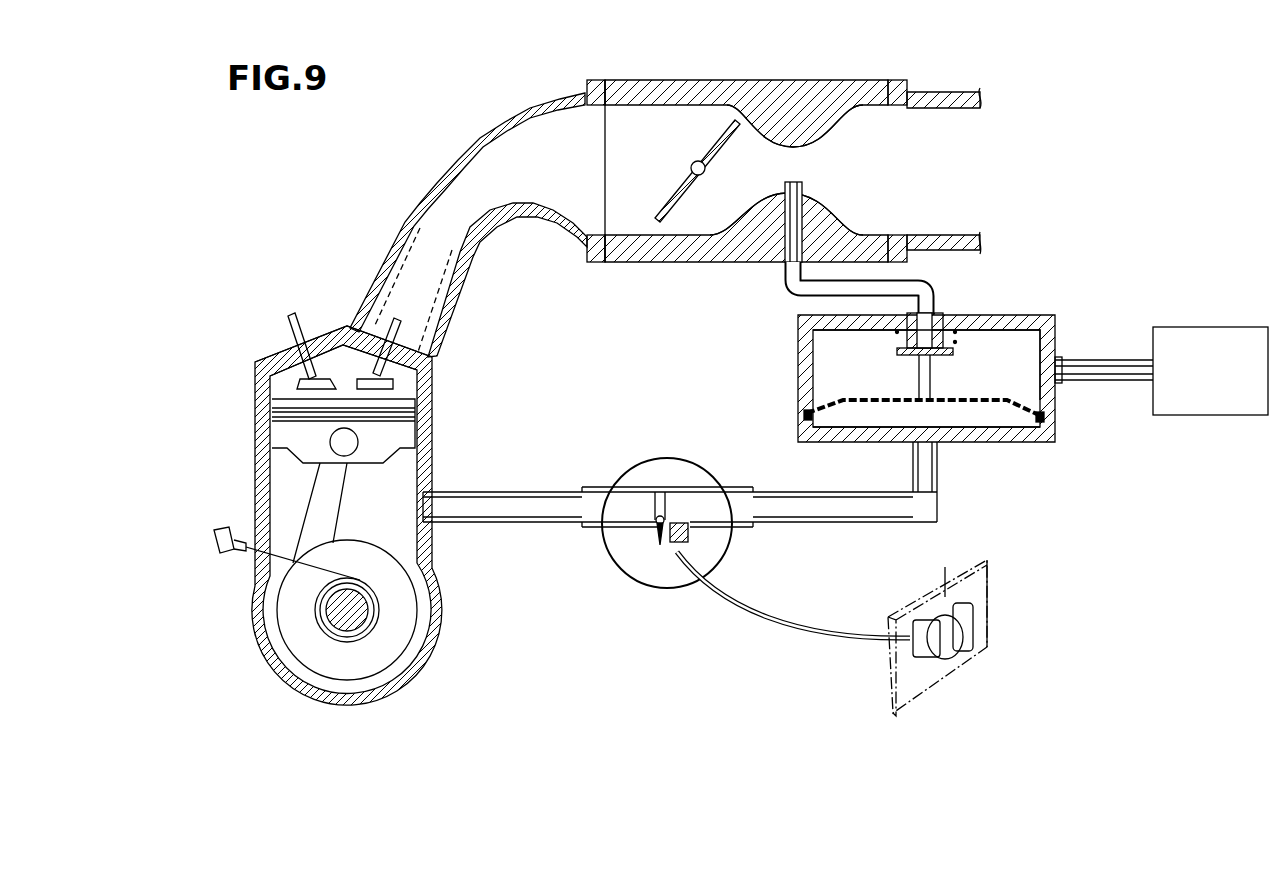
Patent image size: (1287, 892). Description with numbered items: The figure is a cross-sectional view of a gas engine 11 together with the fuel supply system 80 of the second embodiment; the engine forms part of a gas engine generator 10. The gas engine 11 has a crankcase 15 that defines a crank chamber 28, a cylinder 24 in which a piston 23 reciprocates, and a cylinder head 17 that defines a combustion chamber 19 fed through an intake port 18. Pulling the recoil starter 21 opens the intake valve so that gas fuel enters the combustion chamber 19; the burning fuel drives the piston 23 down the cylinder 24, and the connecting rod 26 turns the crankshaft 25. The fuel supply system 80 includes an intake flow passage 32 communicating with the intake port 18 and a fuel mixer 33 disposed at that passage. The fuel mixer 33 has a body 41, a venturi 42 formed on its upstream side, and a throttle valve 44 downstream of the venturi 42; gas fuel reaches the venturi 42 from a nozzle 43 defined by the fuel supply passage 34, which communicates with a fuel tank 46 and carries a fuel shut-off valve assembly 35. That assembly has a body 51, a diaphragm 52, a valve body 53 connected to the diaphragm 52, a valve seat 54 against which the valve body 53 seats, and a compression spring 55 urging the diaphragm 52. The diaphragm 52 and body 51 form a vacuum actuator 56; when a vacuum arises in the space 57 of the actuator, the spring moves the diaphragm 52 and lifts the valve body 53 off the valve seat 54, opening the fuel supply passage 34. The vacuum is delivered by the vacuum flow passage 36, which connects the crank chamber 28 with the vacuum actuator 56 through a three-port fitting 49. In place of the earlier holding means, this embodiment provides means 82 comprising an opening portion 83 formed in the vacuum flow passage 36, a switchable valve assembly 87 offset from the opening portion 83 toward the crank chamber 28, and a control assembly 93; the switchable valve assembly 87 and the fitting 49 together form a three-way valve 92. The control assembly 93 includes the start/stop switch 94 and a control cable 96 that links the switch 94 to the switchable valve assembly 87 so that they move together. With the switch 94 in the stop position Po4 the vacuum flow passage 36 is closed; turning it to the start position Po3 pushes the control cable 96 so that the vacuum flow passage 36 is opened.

The gas engine generator 10 is at (660, 457).
The gas engine 11 is at (248, 424).
The crankcase 15 is at (262, 508).
The cylinder head 17 is at (272, 356).
The intake port 18 is at (367, 330).
The combustion chamber 19 is at (340, 373).
The recoil starter 21 is at (218, 558).
The piston 23 is at (297, 437).
The cylinder 24 is at (278, 477).
The crankshaft 25 is at (343, 618).
The connecting rod 26 is at (428, 478).
The crank chamber 28 is at (398, 527).
The intake flow passage 32 is at (460, 140).
The fuel mixer 33 is at (682, 78).
The fuel supply passage 34 is at (788, 288).
The fuel shut-off valve assembly 35 is at (1042, 312).
The vacuum flow passage 36 is at (556, 526).
The body 41 is at (800, 85).
The venturi 42 is at (770, 212).
The nozzle 43 is at (804, 183).
The throttle valve 44 is at (656, 197).
The fuel tank 46 is at (1188, 345).
The fitting 49 is at (625, 487).
The body 51 is at (1005, 315).
The diaphragm 52 is at (870, 397).
The valve body 53 is at (938, 356).
The valve seat 54 is at (943, 332).
The compression spring 55 is at (900, 342).
The vacuum actuator 56 is at (825, 400).
The space 57 is at (903, 410).
The fuel supply system 80 is at (1010, 233).
The means for holding the vacuum flow passage open 82 is at (844, 720).
The opening portion 83 is at (684, 540).
The switchable valve assembly 87 is at (655, 503).
The three-way valve 92 is at (690, 480).
The control assembly 93 is at (912, 648).
The start/stop switch 94 is at (957, 663).
The control cable 96 is at (784, 623).
The start position Po3 is at (948, 569).
The stop position Po4 is at (985, 610).